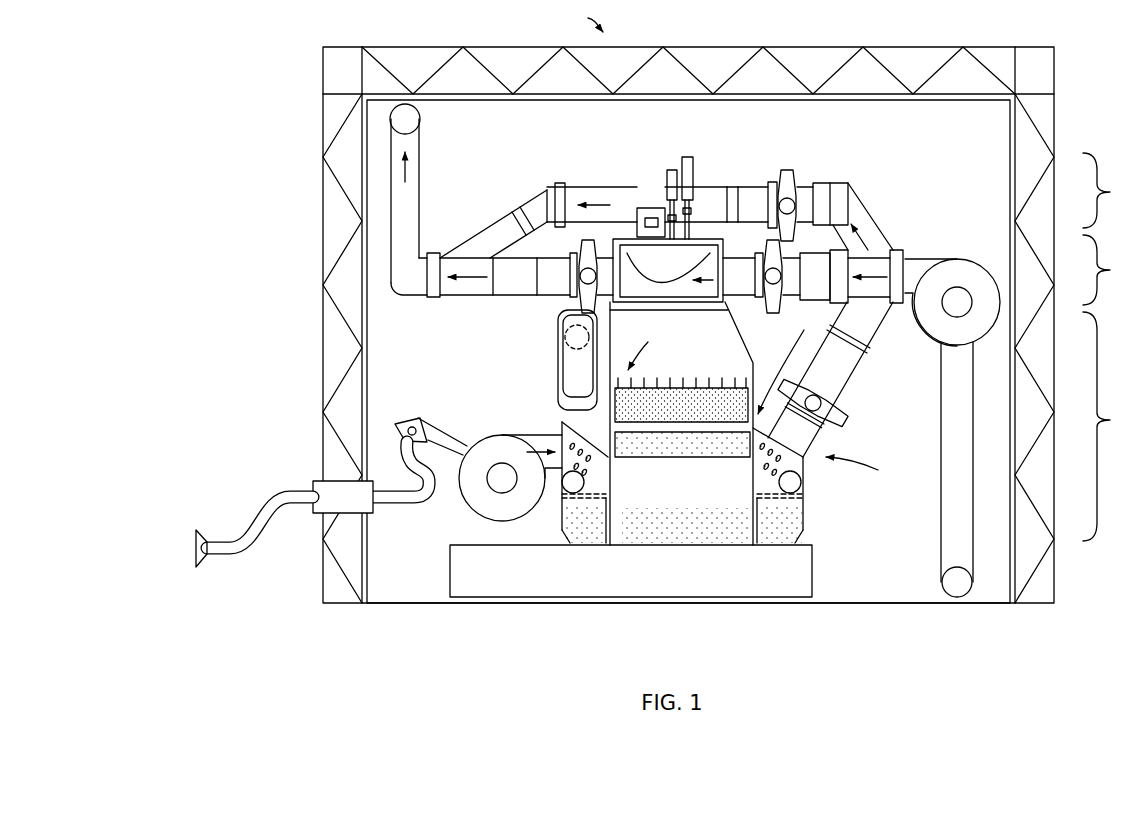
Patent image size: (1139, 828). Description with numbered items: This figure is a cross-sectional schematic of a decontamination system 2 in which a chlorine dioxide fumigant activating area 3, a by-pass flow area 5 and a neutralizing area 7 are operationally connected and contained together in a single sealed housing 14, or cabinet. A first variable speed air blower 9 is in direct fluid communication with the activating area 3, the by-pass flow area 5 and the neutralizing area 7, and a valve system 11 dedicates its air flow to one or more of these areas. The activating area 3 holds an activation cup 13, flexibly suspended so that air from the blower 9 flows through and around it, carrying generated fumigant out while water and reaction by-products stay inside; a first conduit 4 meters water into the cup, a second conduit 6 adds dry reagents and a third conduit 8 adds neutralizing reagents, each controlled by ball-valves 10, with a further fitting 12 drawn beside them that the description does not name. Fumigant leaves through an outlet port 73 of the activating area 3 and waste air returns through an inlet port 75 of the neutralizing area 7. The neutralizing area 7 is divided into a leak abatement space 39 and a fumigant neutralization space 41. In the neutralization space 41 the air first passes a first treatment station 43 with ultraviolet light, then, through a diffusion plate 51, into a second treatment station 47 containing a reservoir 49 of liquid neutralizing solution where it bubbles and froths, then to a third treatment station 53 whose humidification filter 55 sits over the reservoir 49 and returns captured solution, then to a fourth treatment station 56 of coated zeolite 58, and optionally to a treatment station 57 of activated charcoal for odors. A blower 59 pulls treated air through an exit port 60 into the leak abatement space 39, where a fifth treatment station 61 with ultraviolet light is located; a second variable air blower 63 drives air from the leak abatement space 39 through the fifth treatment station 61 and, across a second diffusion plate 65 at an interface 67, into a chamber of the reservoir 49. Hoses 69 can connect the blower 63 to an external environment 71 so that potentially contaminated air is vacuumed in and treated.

The plant processing system 2 is at (589, 16).
The chlorine dioxide fumigant activating area 3 is at (761, 212).
The first conduit 4 is at (669, 170).
The by-pass flow area 5 is at (785, 205).
The second conduit 6 is at (653, 210).
The neutralizing area 7 is at (790, 454).
The third conduit 8 is at (688, 157).
The first variable speed air blower 9 is at (957, 268).
The ball-valves 10 is at (690, 212).
The valve system 11 is at (788, 186).
The duct joint 12 is at (724, 200).
The activation cup 13 is at (670, 278).
The sealed housing 14 is at (1055, 75).
The leak abatement space 39 is at (380, 413).
The fumigant neutralization space 41 is at (837, 392).
The first treatment station 43 is at (802, 480).
The second treatment station 47 is at (712, 498).
The reservoir 49 is at (688, 525).
The diffusion plate 51 is at (761, 508).
The third treatment station 53 is at (789, 360).
The humidification filter 55 is at (677, 448).
The fourth treatment station 56 is at (643, 344).
The activated charcoal treatment station 57 is at (738, 362).
The coated zeolite 58 is at (682, 406).
The blower 59 is at (571, 340).
The exit port 60 is at (609, 341).
The fifth treatment station 61 is at (561, 457).
The second variable air blower 63 is at (480, 503).
The second diffusion plate 65 is at (605, 516).
The interface 67 is at (612, 535).
The hoses 69 is at (393, 504).
The external environment 71 is at (195, 548).
The outlet port 73 is at (421, 119).
The inlet port 75 is at (942, 584).